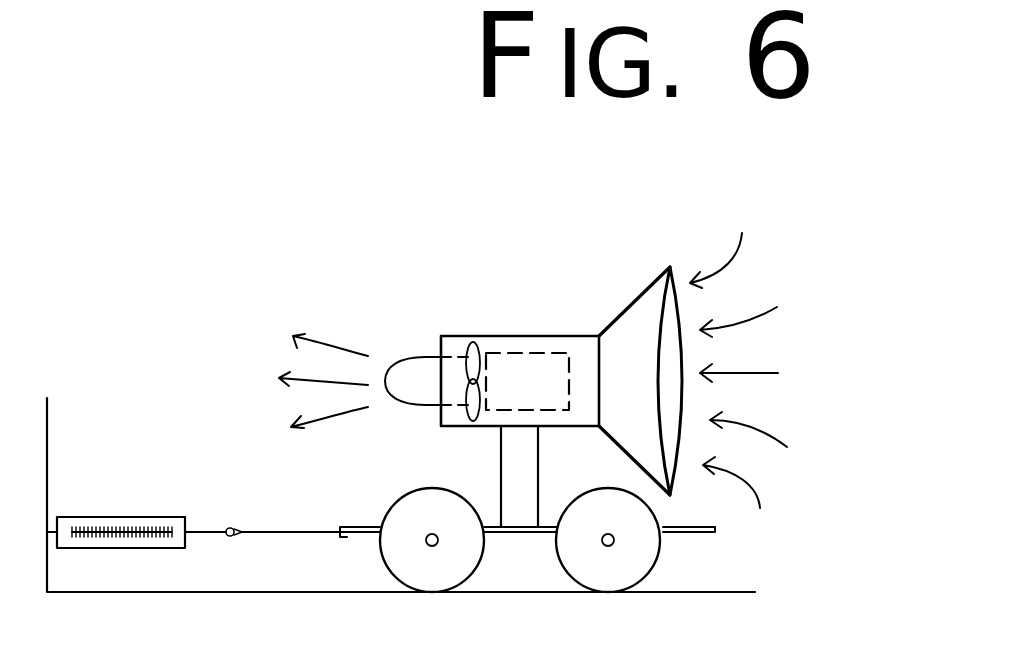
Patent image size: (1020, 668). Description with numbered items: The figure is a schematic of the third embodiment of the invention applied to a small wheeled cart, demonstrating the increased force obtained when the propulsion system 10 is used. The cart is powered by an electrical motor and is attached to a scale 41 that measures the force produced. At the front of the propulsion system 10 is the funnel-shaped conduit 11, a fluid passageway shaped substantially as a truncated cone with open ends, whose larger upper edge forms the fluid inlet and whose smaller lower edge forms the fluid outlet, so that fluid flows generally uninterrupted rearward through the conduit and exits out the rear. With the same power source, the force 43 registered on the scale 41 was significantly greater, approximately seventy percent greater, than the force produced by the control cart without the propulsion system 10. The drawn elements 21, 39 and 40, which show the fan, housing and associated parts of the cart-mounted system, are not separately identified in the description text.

The propulsion system 10 is at (592, 235).
The funnel-shaped conduit 11 is at (633, 318).
The fan 21 is at (473, 383).
The generator 39 is at (520, 335).
The housing 40 is at (463, 285).
The scale 41 is at (172, 515).
The force 43 is at (133, 540).